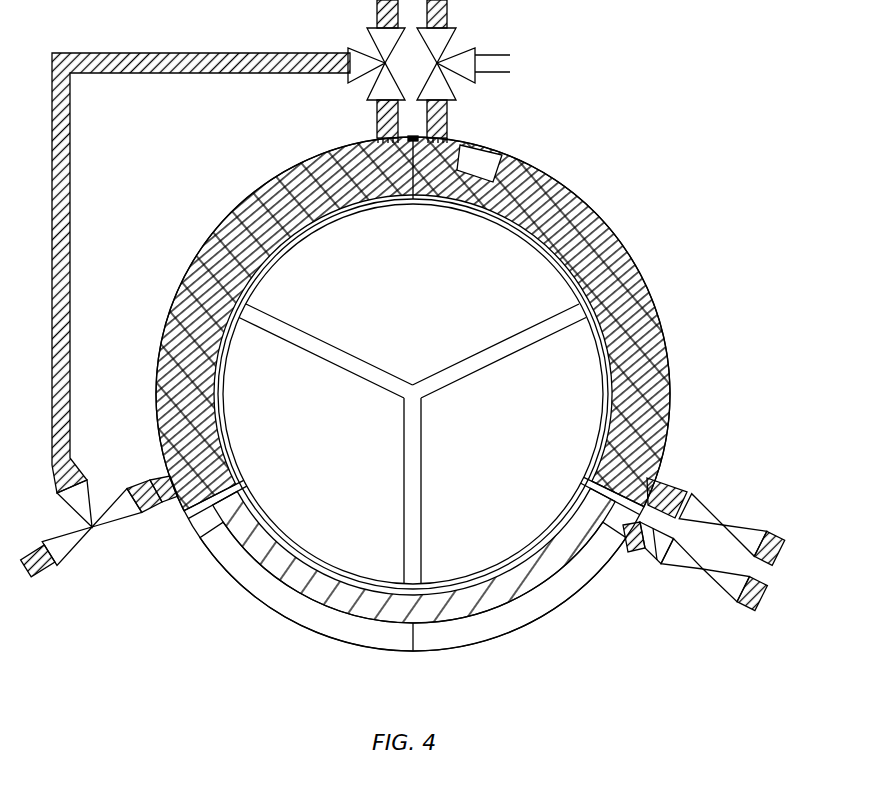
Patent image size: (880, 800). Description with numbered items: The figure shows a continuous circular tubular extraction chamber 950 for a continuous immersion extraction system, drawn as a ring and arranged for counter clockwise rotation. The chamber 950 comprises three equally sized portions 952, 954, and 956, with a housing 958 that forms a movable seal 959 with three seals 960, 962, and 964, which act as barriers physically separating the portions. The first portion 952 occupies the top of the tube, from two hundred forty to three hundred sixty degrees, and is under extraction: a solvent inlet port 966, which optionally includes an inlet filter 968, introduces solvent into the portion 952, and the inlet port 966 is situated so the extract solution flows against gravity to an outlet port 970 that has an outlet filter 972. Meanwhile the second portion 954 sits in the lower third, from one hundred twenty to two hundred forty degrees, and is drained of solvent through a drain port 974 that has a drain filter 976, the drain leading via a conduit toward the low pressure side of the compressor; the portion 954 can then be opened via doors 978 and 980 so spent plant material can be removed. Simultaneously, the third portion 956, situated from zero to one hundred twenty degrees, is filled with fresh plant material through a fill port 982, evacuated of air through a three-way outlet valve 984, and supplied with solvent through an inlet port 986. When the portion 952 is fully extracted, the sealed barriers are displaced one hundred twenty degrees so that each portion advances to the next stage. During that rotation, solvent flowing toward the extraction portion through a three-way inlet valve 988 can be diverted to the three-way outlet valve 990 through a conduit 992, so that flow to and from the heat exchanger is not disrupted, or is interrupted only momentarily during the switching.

The continuous circular tubular extraction chamber 950 is at (579, 56).
The first portion 952 is at (255, 202).
The second portion 954 is at (368, 617).
The third portion 956 is at (610, 262).
The housing 958 is at (175, 298).
The movable seal 959 is at (300, 234).
The seal 960 is at (413, 199).
The seal 962 is at (240, 486).
The seal 964 is at (587, 484).
The solvent inlet port 966 is at (150, 488).
The inlet filter 968 is at (167, 480).
The outlet port 970 is at (375, 118).
The outlet filter 972 is at (378, 136).
The drain port 974 is at (646, 548).
The drain filter 976 is at (624, 540).
The door 978 is at (293, 615).
The door 980 is at (500, 628).
The fill port 982 is at (485, 158).
The 3-way outlet valve 984 is at (443, 38).
The inlet port 986 is at (666, 483).
The 3-way inlet valve 988 is at (110, 528).
The 3-way outlet valve 990 is at (362, 54).
The conduit 992 is at (64, 185).